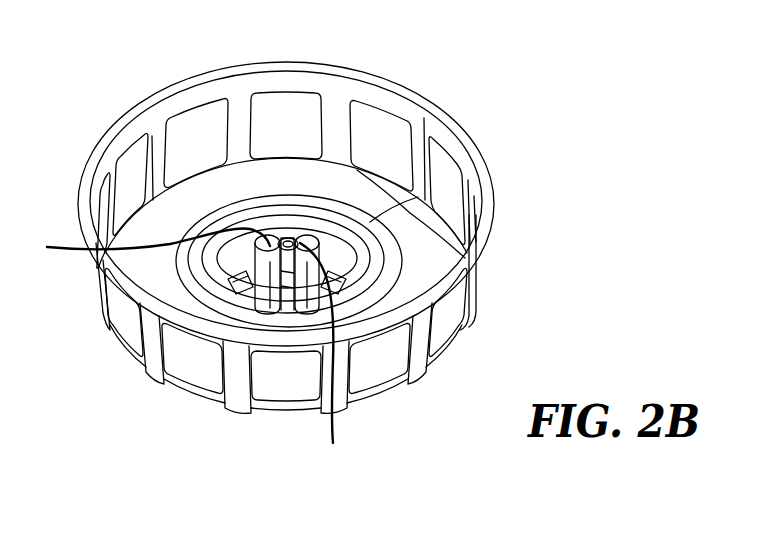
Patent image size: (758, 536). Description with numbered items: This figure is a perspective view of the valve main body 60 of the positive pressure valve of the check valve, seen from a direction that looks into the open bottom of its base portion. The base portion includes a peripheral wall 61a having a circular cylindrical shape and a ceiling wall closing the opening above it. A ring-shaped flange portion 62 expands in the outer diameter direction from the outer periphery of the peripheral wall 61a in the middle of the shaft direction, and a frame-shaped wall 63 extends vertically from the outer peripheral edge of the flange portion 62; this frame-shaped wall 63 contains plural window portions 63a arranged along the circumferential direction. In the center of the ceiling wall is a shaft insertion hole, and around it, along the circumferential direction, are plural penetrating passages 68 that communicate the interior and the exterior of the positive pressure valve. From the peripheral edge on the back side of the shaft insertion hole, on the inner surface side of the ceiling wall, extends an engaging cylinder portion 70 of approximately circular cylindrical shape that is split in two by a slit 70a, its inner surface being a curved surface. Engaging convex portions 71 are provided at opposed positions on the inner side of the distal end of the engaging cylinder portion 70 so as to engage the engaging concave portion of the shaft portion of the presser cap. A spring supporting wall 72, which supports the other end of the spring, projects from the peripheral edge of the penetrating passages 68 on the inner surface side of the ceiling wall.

The valve main body 60 is at (291, 424).
The peripheral wall 61a is at (427, 201).
The flange portion 62 is at (386, 391).
The frame-shaped wall 63 is at (152, 366).
The window portion 63a is at (392, 122).
The penetrating passage 68 is at (345, 279).
The engaging cylinder portion 70 is at (303, 238).
The slit 70a is at (287, 236).
The engaging convex portion 71 is at (180, 349).
The spring supporting wall 72 is at (324, 257).